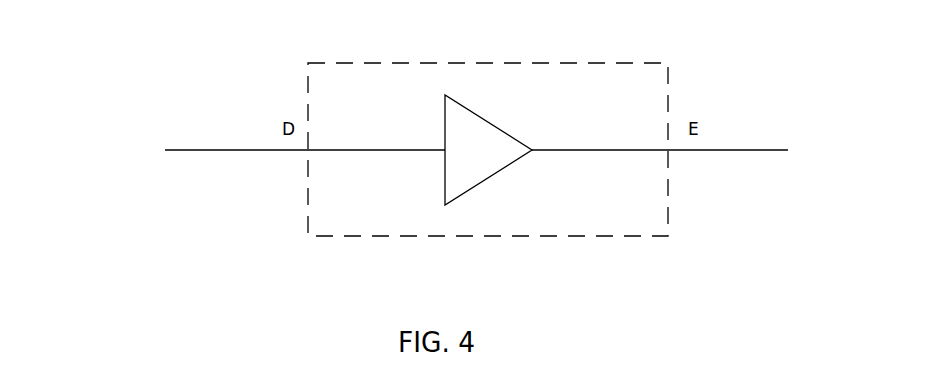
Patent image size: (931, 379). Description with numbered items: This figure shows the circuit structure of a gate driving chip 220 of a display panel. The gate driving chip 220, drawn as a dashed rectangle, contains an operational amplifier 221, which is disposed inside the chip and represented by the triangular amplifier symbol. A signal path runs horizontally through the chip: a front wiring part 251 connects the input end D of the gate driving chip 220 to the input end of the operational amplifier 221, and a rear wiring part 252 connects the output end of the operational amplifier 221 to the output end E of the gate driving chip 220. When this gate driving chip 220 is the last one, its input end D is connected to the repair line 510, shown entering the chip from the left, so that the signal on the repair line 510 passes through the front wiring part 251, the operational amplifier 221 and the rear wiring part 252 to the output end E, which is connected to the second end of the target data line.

The repair line 510 is at (212, 150).
The gate driving chip 220 is at (385, 62).
The front wiring part 251 is at (418, 150).
The operational amplifier 221 is at (441, 103).
The rear wiring part 252 is at (637, 150).